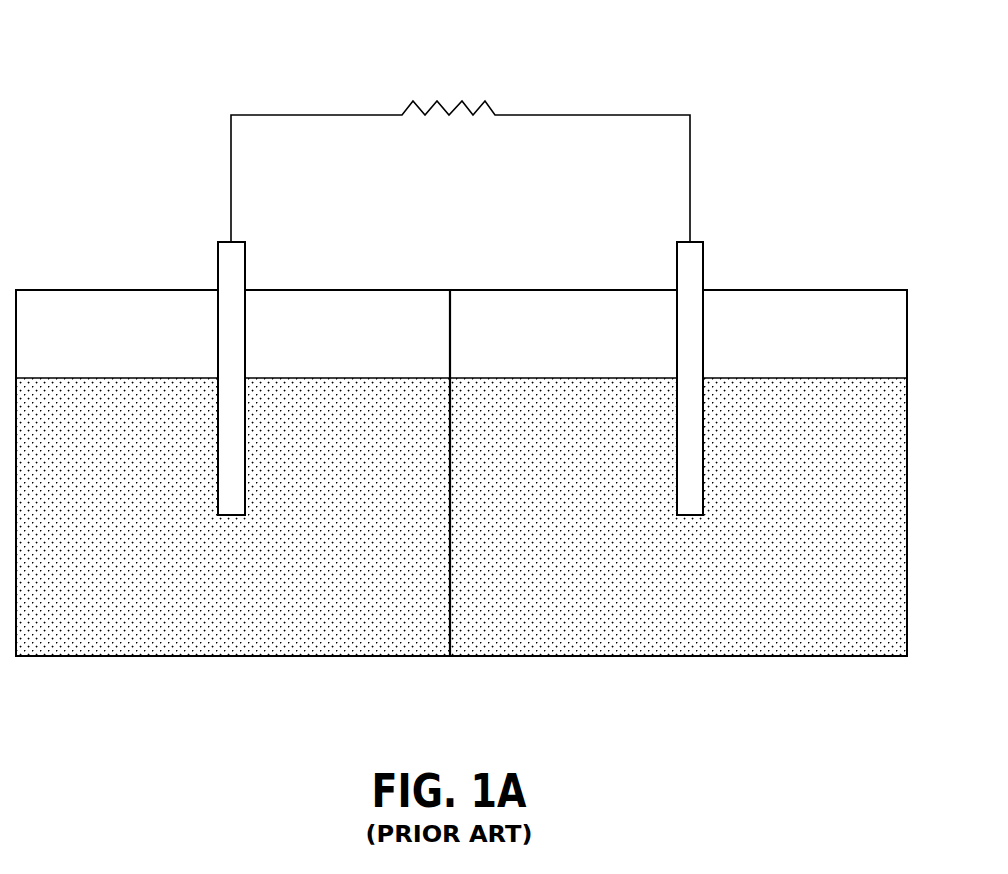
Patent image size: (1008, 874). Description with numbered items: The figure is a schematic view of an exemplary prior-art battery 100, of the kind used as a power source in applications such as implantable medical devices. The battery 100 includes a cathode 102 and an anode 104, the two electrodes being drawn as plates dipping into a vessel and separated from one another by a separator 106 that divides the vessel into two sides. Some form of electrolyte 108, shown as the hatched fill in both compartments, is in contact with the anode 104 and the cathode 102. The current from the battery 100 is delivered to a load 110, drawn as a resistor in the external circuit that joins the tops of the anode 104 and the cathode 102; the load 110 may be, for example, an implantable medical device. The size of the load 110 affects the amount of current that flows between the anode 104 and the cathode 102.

The battery 100 is at (74, 90).
The cathode 102 is at (218, 261).
The anode 104 is at (703, 260).
The separator 106 is at (458, 622).
The electrolyte 108 is at (366, 575).
The load 110 is at (464, 85).